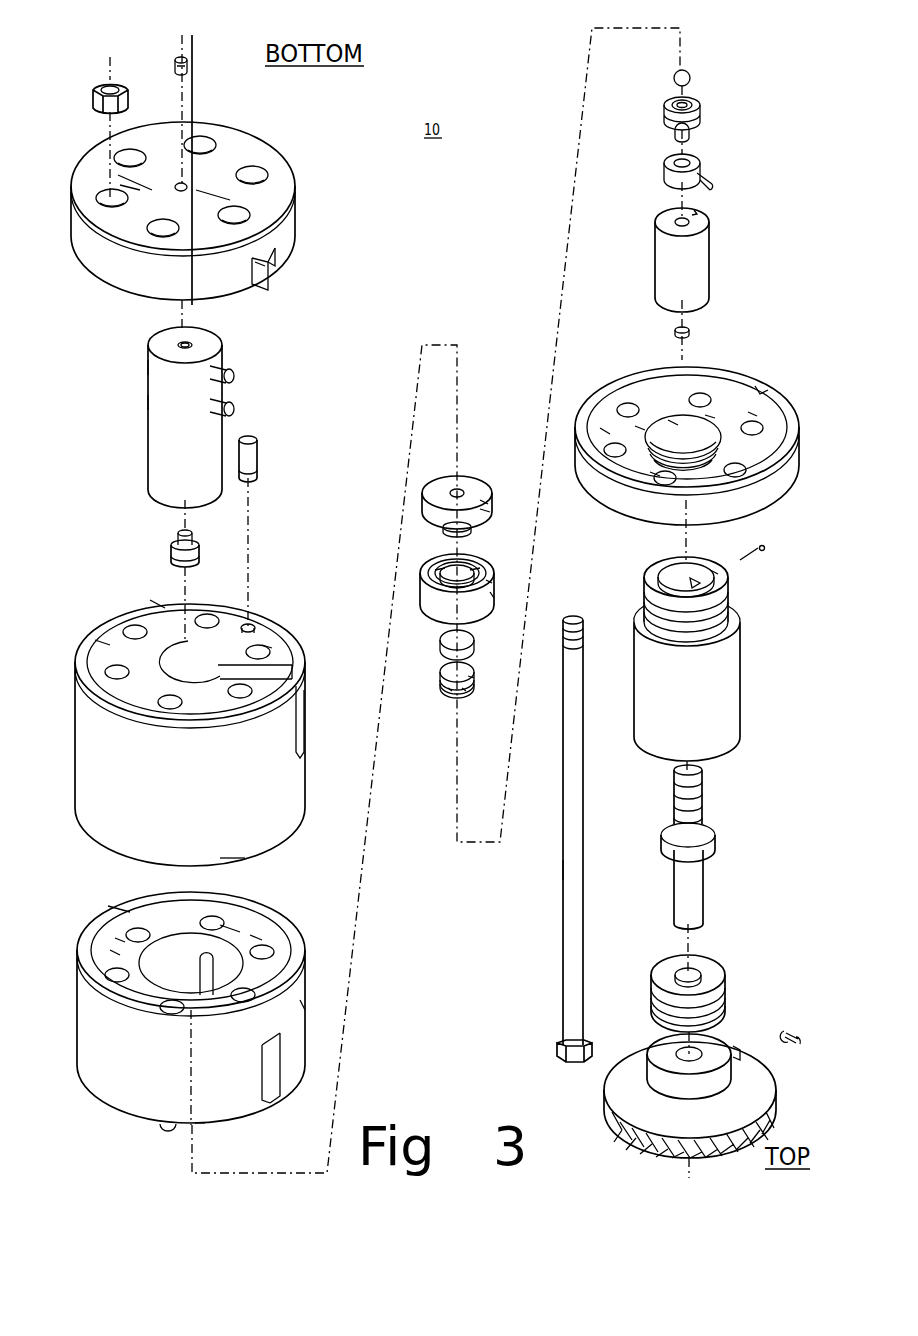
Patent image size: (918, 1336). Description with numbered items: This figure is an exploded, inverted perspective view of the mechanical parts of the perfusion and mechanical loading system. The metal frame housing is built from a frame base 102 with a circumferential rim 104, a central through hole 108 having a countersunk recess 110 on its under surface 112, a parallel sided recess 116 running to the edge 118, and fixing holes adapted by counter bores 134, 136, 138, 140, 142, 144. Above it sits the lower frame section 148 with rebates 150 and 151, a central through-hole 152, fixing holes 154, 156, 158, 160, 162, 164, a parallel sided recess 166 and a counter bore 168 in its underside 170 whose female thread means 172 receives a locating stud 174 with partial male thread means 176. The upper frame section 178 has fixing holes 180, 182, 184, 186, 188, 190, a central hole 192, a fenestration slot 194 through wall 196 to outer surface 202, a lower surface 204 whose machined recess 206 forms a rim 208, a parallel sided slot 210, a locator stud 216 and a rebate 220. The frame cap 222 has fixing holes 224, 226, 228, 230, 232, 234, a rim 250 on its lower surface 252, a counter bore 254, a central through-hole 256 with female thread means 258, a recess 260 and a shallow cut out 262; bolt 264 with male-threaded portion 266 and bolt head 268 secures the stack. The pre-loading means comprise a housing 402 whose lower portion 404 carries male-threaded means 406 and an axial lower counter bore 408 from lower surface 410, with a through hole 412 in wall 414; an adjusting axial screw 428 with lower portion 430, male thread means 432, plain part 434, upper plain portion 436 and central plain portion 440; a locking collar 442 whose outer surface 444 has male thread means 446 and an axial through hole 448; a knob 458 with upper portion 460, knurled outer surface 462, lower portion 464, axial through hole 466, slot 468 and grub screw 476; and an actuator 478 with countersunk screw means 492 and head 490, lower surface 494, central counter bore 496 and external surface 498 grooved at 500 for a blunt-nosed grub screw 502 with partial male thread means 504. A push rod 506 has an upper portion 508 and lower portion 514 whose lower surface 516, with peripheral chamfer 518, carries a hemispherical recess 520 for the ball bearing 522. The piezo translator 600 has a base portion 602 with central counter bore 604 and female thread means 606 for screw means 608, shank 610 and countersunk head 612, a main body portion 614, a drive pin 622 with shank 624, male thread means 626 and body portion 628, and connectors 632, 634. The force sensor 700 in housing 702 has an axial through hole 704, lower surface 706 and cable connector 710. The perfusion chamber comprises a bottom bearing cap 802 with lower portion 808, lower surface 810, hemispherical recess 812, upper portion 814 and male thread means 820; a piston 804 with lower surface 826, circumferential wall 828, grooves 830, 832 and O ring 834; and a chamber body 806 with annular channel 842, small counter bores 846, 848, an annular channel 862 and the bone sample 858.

The frame base 102 is at (115, 265).
The circumferential rim 104 is at (272, 275).
The central circular through hole 108 is at (175, 187).
The countersunk recess 110 is at (196, 190).
The under surface 112 is at (130, 186).
The parallel sided recess 116 is at (272, 264).
The edge 118 is at (278, 255).
The counter bore 134 is at (214, 142).
The counter bore 136 is at (266, 172).
The counter bore 138 is at (250, 218).
The counter bore 140 is at (148, 228).
The counter bore 142 is at (97, 198).
The counter bore 144 is at (135, 180).
The lower frame section 148 is at (118, 760).
The upper rebate 150 is at (232, 860).
The lower rebate 151 is at (290, 670).
The central circular through-hole 152 is at (100, 640).
The fixing hole 154 is at (222, 626).
The fixing hole 156 is at (272, 648).
The fixing hole 158 is at (255, 693).
The fixing hole 160 is at (158, 702).
The fixing hole 162 is at (108, 672).
The fixing hole 164 is at (122, 630).
The parallel sided recess 166 is at (304, 735).
The counter bore 168 is at (265, 612).
The underside 170 is at (155, 606).
The female thread means 172 is at (258, 625).
The locating stud 174 is at (260, 453).
The partial male thread means 176 is at (260, 468).
The upper frame section 178 is at (78, 1030).
The fixing hole 180 is at (225, 922).
The fixing hole 182 is at (245, 945).
The fixing hole 184 is at (255, 990).
The fixing hole 186 is at (158, 1007).
The fixing hole 188 is at (103, 975).
The fixing hole 190 is at (125, 935).
The central circular hole 192 is at (120, 942).
The fenestration slot 194 is at (225, 958).
The wall 196 is at (238, 928).
The outer surface 202 is at (307, 1015).
The lower surface 204 is at (115, 955).
The machined recess 206 is at (275, 955).
The rim 208 is at (120, 906).
The parallel sided slot 210 is at (272, 1055).
The locator stud 216 is at (162, 1132).
The circumferential rebate 220 is at (205, 1123).
The frame cap 222 is at (800, 462).
The fixing hole 224 is at (700, 398).
The fixing hole 226 is at (758, 425).
The fixing hole 228 is at (748, 466).
The fixing hole 230 is at (663, 472).
The fixing hole 232 is at (622, 444).
The fixing hole 234 is at (626, 404).
The rim 250 is at (604, 432).
The lower surface 252 is at (755, 414).
The counter bore 254 is at (657, 477).
The central circular through-hole 256 is at (673, 420).
The female thread means 258 is at (717, 413).
The central circular recess 260 is at (640, 430).
The shallow cut out 262 is at (762, 393).
The bolt 264 is at (562, 872).
The male-threaded portion 266 is at (584, 655).
The bolt head 268 is at (105, 82).
The housing 402 is at (742, 668).
The lower portion 404 is at (730, 594).
The male-threaded means 406 is at (735, 607).
The axial lower counter bore 408 is at (655, 575).
The lower surface 410 is at (617, 515).
The through hole 412 is at (690, 580).
The wall 414 is at (718, 566).
The adjusting axial screw 428 is at (674, 878).
The lower portion 430 is at (676, 802).
The male thread means 432 is at (676, 786).
The plain part 434 is at (668, 832).
The upper plain portion 436 is at (674, 898).
The central plain portion 440 is at (662, 843).
The locking collar 442 is at (700, 975).
The outer surface 444 is at (726, 990).
The male thread means 446 is at (726, 1006).
The axial through hole 448 is at (700, 968).
The knob 458 is at (608, 1102).
The upper portion 460 is at (610, 1114).
The knurled outer surface 462 is at (616, 1127).
The lower portion 464 is at (647, 1070).
The axial through hole 466 is at (680, 1050).
The slot 468 is at (740, 1050).
The grub screw 476 is at (792, 1046).
The actuator 478 is at (710, 263).
The head 490 is at (676, 332).
The countersunk screw means 492 is at (678, 329).
The lower surface 494 is at (657, 227).
The central counter bore 496 is at (676, 221).
The external surface 498 is at (710, 243).
The vertical parallel sided groove 500 is at (698, 213).
The blunt-nosed grub screw 502 is at (735, 570).
The partial male thread means 504 is at (765, 548).
The push rod 506 is at (664, 116).
The upper portion 508 is at (674, 136).
The lower portion 514 is at (668, 108).
The lower surface 516 is at (678, 101).
The peripheral chamfer 518 is at (700, 113).
The hemispherical recess 520 is at (700, 105).
The ball bearing 522 is at (690, 80).
The piezo translator 600 is at (148, 430).
The base portion 602 is at (148, 362).
The central counter bore 604 is at (180, 346).
The female thread means 606 is at (180, 343).
The countersunk male-threaded screw means 608 is at (194, 62).
The male-threaded shank 610 is at (190, 70).
The countersunk head 612 is at (177, 58).
The main body portion 614 is at (148, 400).
The drive pin 622 is at (200, 550).
The shank 624 is at (193, 540).
The male thread means 626 is at (190, 532).
The body portion 628 is at (172, 553).
The connector 632 is at (236, 408).
The connector 634 is at (236, 375).
The quartz crystal force sensor 700 is at (664, 177).
The housing 702 is at (672, 166).
The axial through hole 704 is at (673, 162).
The lower surface 706 is at (700, 161).
The cable connector 710 is at (712, 182).
The bottom bearing cap 802 is at (492, 502).
The piston 804 is at (446, 690).
The perfusion chamber body 806 is at (494, 596).
The lower portion 808 is at (492, 510).
The lower surface 810 is at (452, 492).
The hemispherical recess 812 is at (440, 490).
The upper portion 814 is at (443, 525).
The male thread means 820 is at (443, 531).
The lower surface 826 is at (470, 672).
The circumferential wall 828 is at (455, 690).
The upper annular groove 830 is at (466, 690).
The lower annular groove 832 is at (445, 688).
The O ring 834 is at (474, 670).
The annular channel 842 is at (488, 580).
The small counter bore 846 is at (438, 570).
The small counter bore 848 is at (478, 570).
The explanted trabecular bone sample 858 is at (474, 640).
The annular channel 862 is at (430, 575).